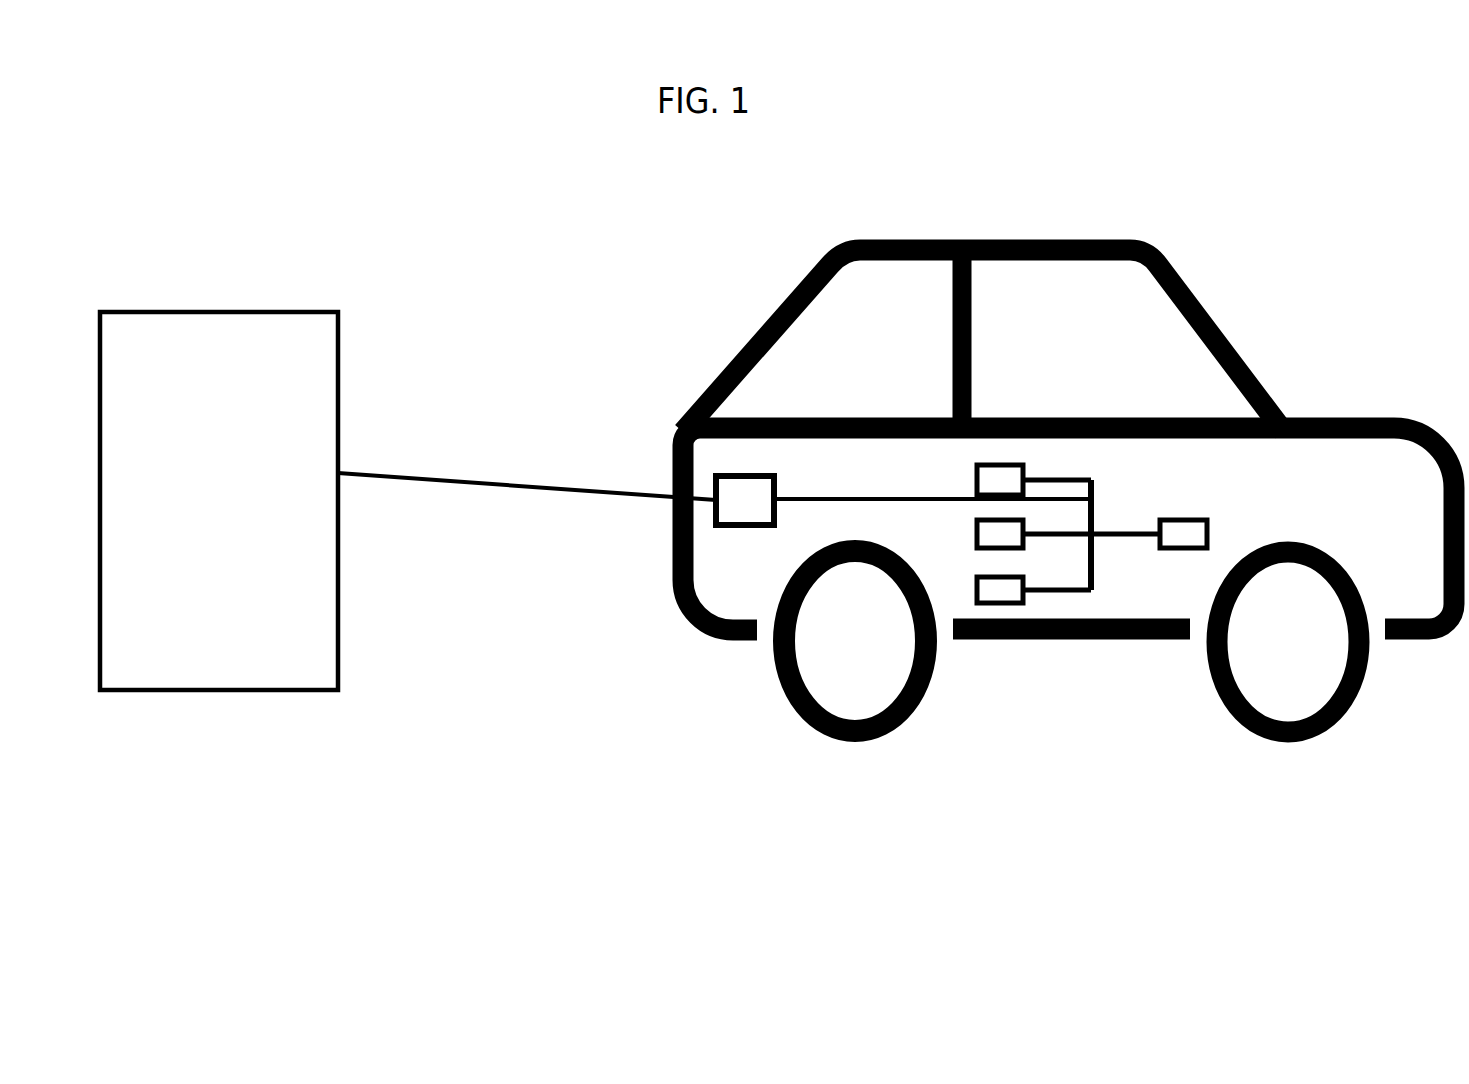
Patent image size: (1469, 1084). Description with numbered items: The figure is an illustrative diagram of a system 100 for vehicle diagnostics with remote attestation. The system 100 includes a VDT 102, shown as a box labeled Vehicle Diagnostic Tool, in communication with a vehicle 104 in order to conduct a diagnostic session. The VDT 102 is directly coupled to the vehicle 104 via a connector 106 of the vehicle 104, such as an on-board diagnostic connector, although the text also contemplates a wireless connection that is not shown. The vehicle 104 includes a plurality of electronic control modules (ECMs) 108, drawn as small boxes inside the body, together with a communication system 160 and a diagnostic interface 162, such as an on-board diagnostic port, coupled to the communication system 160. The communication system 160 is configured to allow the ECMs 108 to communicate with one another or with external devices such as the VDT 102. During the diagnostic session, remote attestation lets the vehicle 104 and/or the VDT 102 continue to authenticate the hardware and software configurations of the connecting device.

The system 100 is at (418, 186).
The VDT 102 is at (250, 570).
The vehicle 104 is at (772, 297).
The connector 106 is at (498, 488).
The electronic control modules (ECMs) 108 is at (1003, 485).
The communication system 160 is at (873, 505).
The diagnostic interface 162 is at (715, 522).